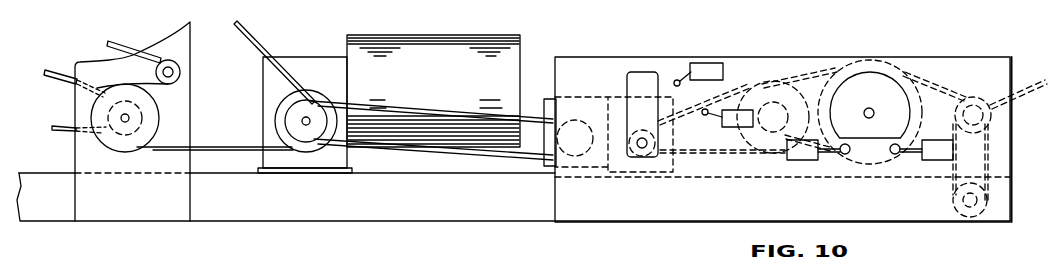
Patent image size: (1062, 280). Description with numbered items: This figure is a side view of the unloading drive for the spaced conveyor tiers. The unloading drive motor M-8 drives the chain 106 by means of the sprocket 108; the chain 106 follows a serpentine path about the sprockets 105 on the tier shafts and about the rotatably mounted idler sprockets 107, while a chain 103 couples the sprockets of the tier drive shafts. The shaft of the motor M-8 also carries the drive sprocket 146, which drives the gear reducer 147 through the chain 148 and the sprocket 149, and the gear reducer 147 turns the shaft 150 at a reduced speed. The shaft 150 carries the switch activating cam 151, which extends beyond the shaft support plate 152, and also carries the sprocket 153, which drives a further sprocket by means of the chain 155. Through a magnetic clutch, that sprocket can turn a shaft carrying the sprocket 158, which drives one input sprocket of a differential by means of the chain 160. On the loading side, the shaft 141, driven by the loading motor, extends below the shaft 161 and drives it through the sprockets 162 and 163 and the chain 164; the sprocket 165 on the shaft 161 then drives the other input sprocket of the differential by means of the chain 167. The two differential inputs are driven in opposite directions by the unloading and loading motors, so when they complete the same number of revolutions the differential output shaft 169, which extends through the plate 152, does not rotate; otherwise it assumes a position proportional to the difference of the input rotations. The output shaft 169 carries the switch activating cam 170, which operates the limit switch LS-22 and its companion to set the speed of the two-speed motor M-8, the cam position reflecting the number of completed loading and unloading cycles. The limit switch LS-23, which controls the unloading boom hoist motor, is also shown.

The chain 103 is at (58, 40).
The sprockets 105 is at (158, 115).
The chain 106 is at (130, 38).
The idler sprockets 107 is at (181, 72).
The sprocket 108 is at (295, 93).
The drive sprocket 146 is at (309, 101).
The unloading drive motor M-8 is at (523, 33).
The chain 148 is at (444, 152).
The gear reducer 147 is at (547, 99).
The sprocket 149 is at (602, 88).
The shaft 150 is at (642, 148).
The switch activating cam 151 is at (637, 72).
The shaft support plate 152 is at (773, 57).
The sprocket 153 is at (648, 152).
The chain 155 is at (735, 132).
The sprocket 158 is at (772, 79).
The chain 160 is at (820, 67).
The shaft 161 is at (972, 97).
The sprocket 162 is at (952, 200).
The sprocket 163 is at (990, 113).
The chain 164 is at (992, 155).
The sprocket 165 is at (1042, 74).
The chain 167 is at (966, 83).
The output shaft 169 is at (870, 108).
The switch activating cam 170 is at (889, 80).
The shaft 141 is at (963, 207).
The limit switch LS-23 is at (716, 40).
The limit switch LS-22 is at (920, 162).